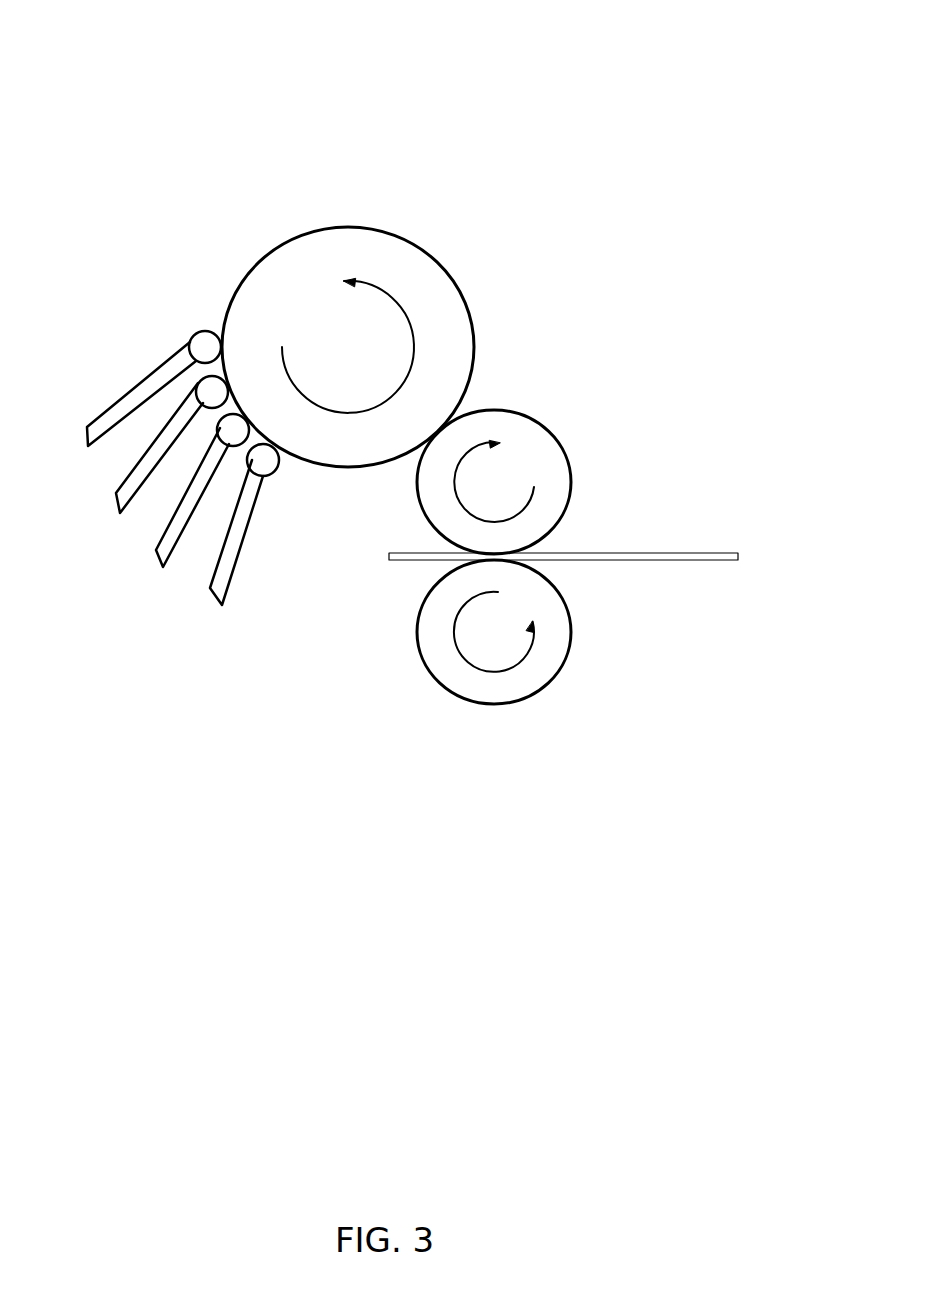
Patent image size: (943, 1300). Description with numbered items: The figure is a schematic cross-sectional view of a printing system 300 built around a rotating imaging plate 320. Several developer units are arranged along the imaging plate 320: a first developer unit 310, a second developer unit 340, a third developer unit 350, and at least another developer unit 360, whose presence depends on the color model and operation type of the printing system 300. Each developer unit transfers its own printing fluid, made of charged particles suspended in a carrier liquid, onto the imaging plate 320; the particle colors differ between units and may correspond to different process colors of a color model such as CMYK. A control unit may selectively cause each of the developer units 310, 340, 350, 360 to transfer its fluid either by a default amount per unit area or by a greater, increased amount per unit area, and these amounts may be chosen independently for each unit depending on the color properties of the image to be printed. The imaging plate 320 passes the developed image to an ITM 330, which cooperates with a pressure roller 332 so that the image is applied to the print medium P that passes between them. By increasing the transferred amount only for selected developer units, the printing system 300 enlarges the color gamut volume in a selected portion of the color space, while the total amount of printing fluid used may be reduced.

The printing system 300 is at (212, 173).
The first developer unit 310 is at (85, 455).
The imaging plate 320 is at (445, 268).
The ITM 330 is at (520, 413).
The pressure roller 332 is at (548, 683).
The second developer unit 340 is at (122, 520).
The third developer unit 350 is at (158, 572).
The another developer unit 360 is at (222, 608).
The recording medium P is at (638, 550).